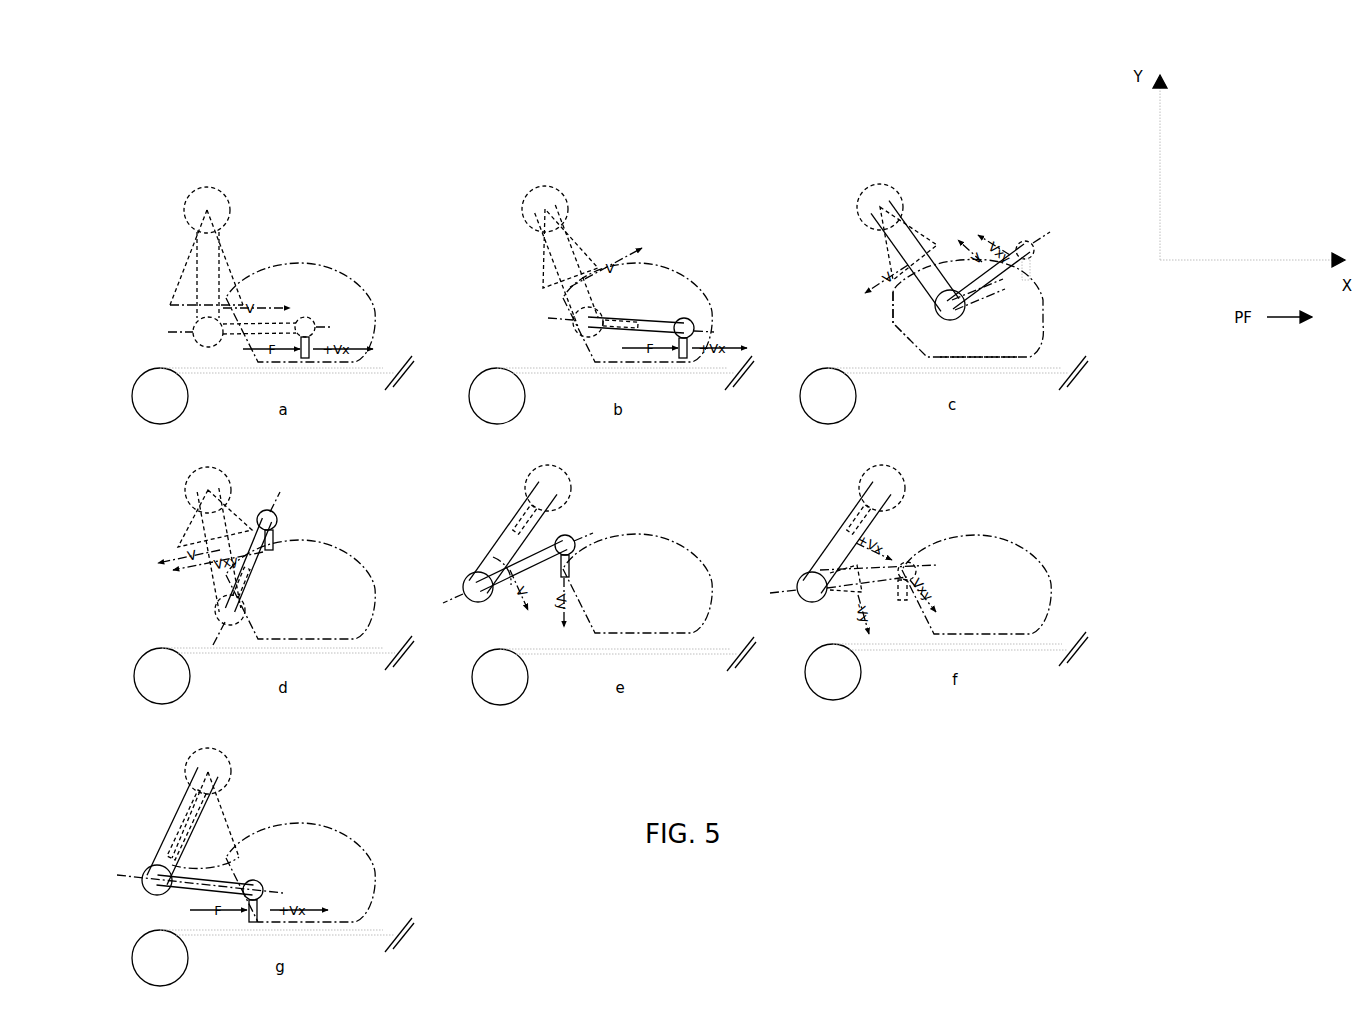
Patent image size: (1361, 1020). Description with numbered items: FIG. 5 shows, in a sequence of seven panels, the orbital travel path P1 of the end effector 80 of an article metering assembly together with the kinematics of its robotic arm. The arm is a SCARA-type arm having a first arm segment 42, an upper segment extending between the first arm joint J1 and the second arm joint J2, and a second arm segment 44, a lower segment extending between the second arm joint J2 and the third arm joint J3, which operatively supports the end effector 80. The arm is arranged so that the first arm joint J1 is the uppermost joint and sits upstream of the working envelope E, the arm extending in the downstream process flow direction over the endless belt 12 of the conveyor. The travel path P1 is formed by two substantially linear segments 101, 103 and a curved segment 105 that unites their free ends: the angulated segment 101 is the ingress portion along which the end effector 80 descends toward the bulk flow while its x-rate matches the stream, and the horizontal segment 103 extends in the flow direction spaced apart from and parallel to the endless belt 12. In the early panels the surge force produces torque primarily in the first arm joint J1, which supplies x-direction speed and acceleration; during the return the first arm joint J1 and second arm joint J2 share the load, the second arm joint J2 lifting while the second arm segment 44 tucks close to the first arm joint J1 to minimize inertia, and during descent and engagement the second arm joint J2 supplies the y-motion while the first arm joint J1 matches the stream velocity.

The endless belt 12 is at (383, 368).
The first arm segment 42 is at (203, 277).
The second arm segment 44 is at (262, 330).
The end effector 80 is at (307, 358).
The substantially linear segment 101 is at (897, 320).
The substantially linear segment 103 is at (990, 355).
The curved segment 105 is at (1043, 315).
The first arm joint J1 is at (202, 202).
The second arm joint J2 is at (205, 333).
The third arm joint J3 is at (307, 324).
The working envelope E is at (320, 243).
The travel path P1 is at (328, 262).